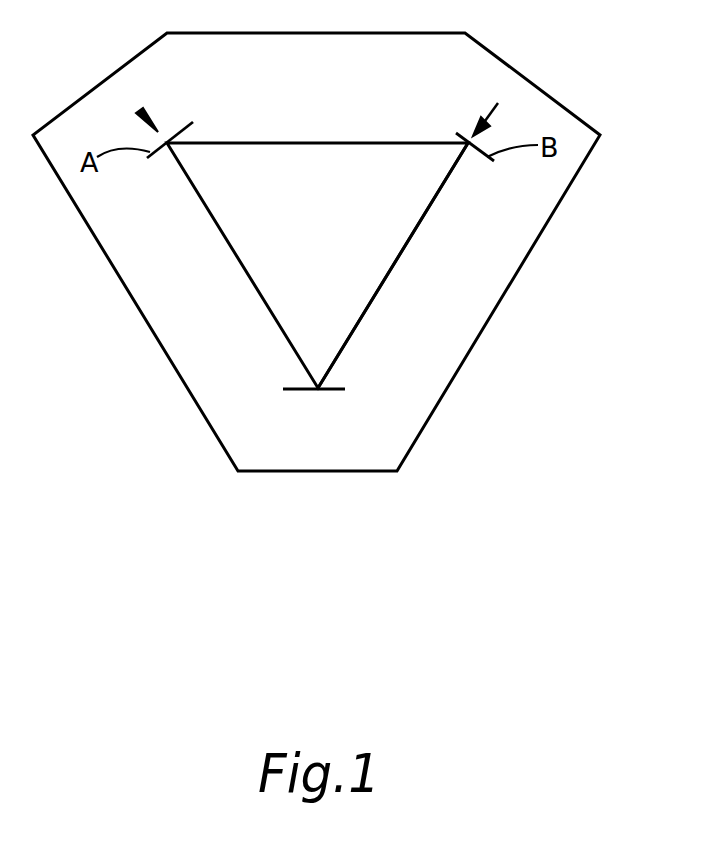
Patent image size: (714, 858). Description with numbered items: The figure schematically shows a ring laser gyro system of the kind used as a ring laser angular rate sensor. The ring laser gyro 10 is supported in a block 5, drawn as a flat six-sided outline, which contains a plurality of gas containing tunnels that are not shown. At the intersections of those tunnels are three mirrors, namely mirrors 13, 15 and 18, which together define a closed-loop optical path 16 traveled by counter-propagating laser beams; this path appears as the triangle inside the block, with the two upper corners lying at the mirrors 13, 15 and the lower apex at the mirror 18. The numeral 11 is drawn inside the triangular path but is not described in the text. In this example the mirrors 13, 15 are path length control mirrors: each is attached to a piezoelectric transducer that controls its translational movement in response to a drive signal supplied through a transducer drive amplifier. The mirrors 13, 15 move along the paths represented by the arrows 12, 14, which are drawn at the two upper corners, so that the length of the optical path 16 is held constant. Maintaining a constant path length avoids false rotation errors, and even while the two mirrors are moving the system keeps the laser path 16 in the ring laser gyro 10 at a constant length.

The block 5 is at (482, 334).
The ring laser gyro 10 is at (662, 65).
The triangular light path 11 is at (307, 265).
The arrow 12 is at (148, 115).
The mirror 13 is at (193, 123).
The arrow 14 is at (483, 123).
The mirror 15 is at (447, 126).
The closed-loop optical path 16 is at (405, 245).
The mirror 18 is at (317, 392).